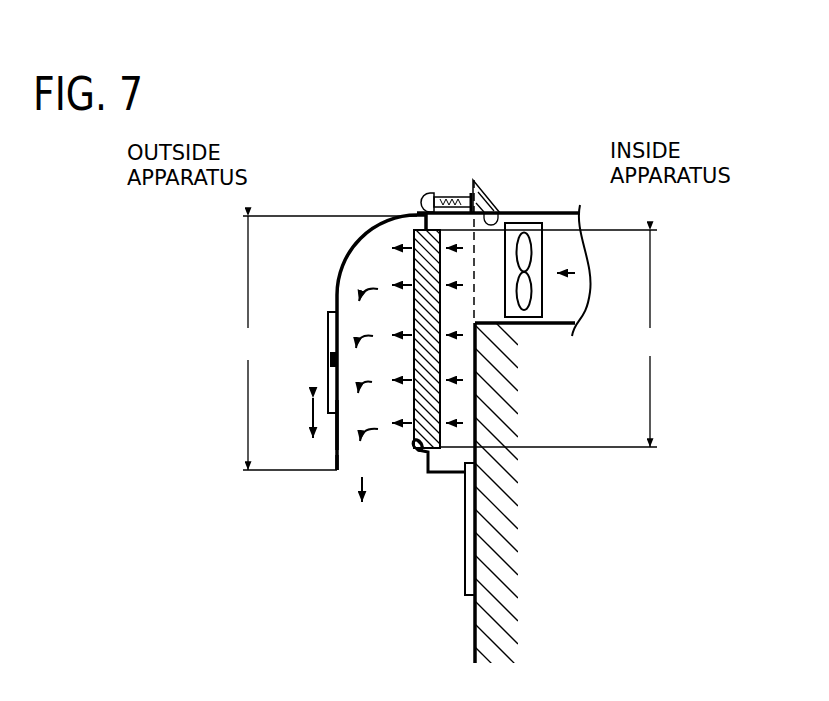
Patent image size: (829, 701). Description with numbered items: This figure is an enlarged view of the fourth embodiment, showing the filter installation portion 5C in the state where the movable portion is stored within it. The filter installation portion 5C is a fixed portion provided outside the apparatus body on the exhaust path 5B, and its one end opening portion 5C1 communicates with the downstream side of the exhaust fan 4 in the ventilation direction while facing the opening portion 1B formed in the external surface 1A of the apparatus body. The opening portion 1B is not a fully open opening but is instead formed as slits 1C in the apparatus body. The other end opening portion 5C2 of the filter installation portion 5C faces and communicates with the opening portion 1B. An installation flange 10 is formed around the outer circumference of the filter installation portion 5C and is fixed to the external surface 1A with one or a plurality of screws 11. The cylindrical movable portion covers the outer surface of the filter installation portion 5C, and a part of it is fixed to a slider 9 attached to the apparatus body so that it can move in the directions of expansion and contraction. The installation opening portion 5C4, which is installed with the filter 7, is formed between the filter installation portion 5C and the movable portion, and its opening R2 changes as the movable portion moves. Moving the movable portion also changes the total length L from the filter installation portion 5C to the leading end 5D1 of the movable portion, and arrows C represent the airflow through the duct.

The external surface 1A is at (473, 626).
The opening portion 1B is at (497, 199).
The slits 1C is at (426, 207).
The exhaust fan 4 is at (543, 291).
The exhaust path 5B is at (570, 252).
The filter installation portion 5C is at (352, 262).
The one end opening portion 5C1 is at (458, 311).
The other end opening portion 5C2 is at (339, 407).
The installation opening portion 5C4 is at (413, 446).
The leading end 5D1 is at (338, 472).
The filter 7 is at (413, 268).
The slider 9 is at (465, 560).
The installation flange 10 is at (470, 197).
The screws 11 is at (437, 197).
The arrows C is at (372, 382).
The total length L is at (328, 343).
The opening R2 is at (553, 338).